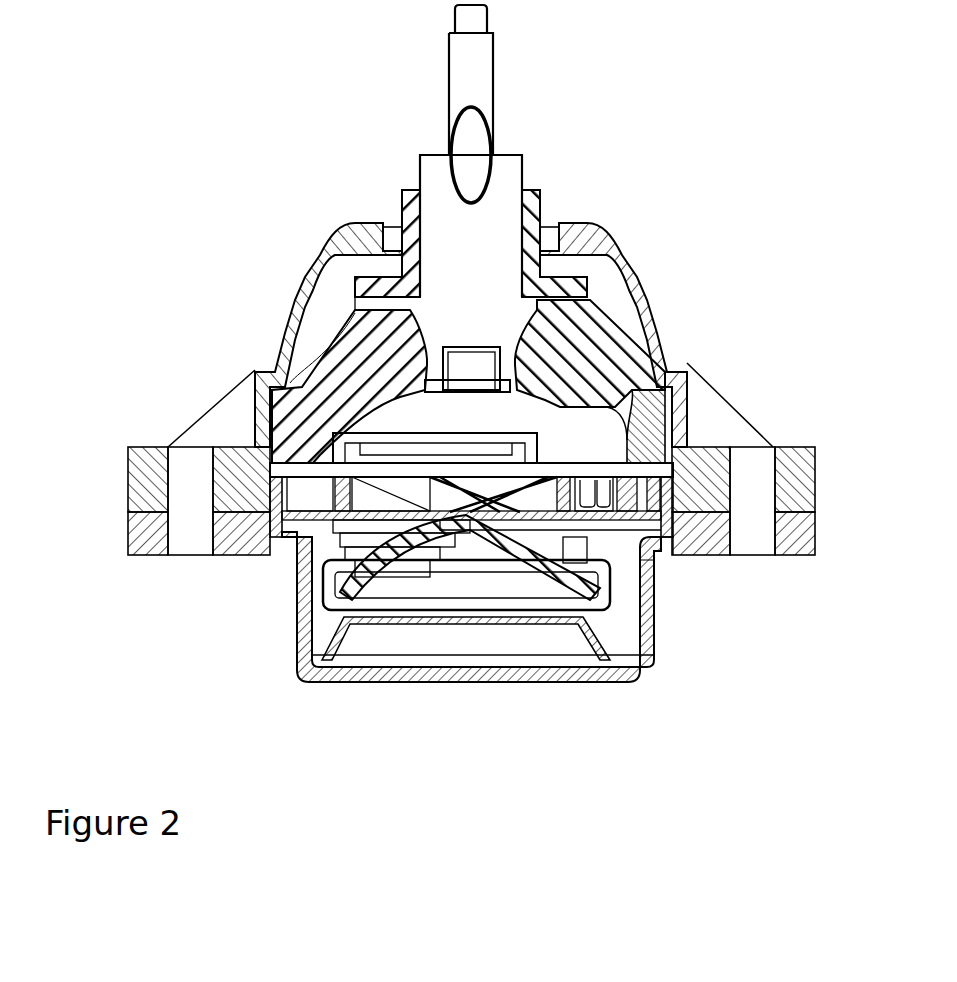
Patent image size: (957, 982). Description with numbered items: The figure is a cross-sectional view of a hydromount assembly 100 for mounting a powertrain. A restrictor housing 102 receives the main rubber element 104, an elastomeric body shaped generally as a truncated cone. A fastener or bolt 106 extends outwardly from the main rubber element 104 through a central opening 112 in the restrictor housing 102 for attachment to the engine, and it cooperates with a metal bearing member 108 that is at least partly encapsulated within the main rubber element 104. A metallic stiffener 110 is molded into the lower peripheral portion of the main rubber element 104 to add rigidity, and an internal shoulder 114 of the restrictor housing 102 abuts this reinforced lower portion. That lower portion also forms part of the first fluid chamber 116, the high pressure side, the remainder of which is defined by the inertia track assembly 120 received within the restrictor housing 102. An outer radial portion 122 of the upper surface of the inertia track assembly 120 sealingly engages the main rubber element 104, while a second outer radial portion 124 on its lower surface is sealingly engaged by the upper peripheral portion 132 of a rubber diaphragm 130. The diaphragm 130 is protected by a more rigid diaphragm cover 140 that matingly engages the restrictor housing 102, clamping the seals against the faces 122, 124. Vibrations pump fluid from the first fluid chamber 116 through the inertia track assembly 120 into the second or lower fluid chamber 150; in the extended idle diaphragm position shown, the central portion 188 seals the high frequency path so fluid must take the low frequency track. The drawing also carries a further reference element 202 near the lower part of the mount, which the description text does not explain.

The hydromount assembly 100 is at (668, 230).
The restrictor housing 102 is at (653, 291).
The main rubber element 104 is at (648, 333).
The fastener or bolt 106 is at (487, 62).
The metal bearing member 108 is at (510, 177).
The metallic stiffener 110 is at (670, 424).
The central opening 112 is at (550, 232).
The internal shoulder 114 is at (667, 357).
The first fluid chamber 116 is at (337, 356).
The inertia track assembly 120 is at (680, 478).
The outer radial portion of upper surface 122 is at (282, 437).
The second outer radial portion of lower surface 124 is at (672, 556).
The diaphragm 130 is at (642, 640).
The upper peripheral portion of diaphragm 132 is at (648, 565).
The diaphragm cover 140 is at (598, 683).
The second fluid chamber 150 is at (298, 562).
The central portion of idle diaphragm 188 is at (445, 455).
The diaphragm 202 is at (318, 648).